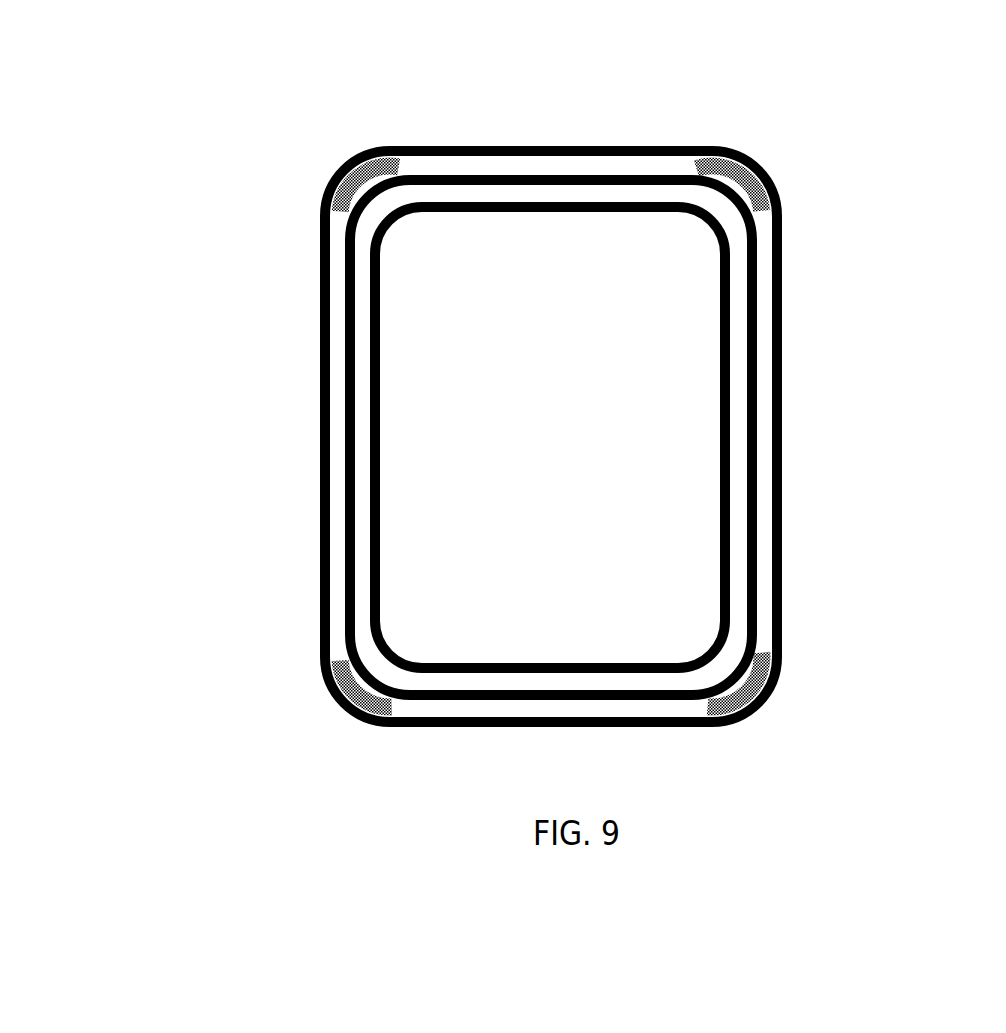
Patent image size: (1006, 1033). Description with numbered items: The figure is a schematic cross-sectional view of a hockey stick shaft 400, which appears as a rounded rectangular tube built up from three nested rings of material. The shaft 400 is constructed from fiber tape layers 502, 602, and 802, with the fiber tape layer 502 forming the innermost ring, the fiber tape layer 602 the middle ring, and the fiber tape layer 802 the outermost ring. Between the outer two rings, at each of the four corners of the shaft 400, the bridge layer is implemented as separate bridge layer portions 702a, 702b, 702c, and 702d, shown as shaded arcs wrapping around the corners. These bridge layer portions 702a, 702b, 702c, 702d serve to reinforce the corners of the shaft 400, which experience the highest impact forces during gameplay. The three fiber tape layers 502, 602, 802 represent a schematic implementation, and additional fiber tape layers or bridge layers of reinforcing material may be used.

The hockey stick shaft 400 is at (185, 112).
The fiber tape layer 502 is at (374, 475).
The fiber tape layer 602 is at (349, 548).
The fiber tape layer 802 is at (322, 605).
The bridge layer portion 702a is at (347, 175).
The bridge layer portion 702b is at (330, 674).
The bridge layer portion 702c is at (770, 690).
The bridge layer portion 702d is at (767, 184).